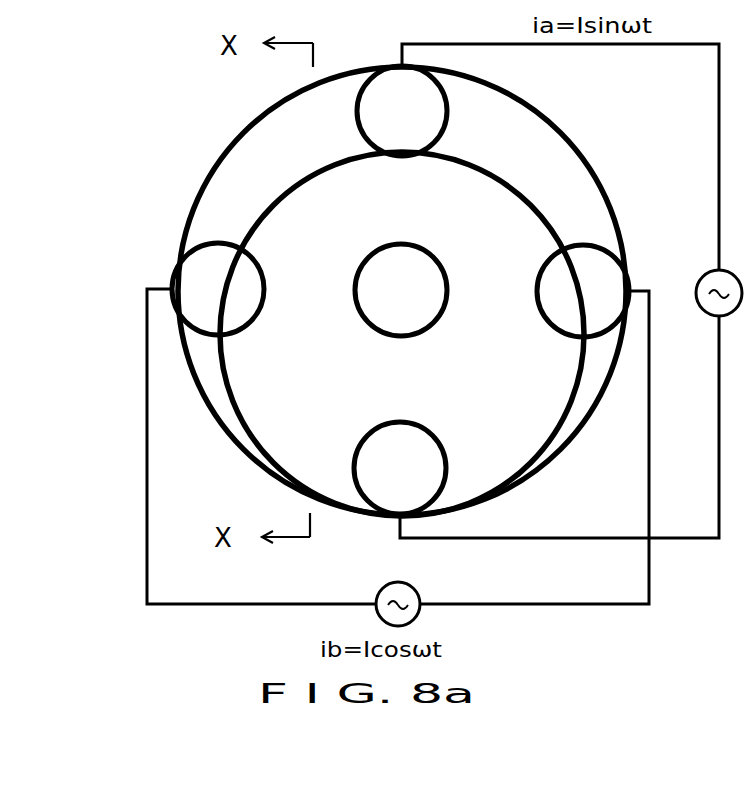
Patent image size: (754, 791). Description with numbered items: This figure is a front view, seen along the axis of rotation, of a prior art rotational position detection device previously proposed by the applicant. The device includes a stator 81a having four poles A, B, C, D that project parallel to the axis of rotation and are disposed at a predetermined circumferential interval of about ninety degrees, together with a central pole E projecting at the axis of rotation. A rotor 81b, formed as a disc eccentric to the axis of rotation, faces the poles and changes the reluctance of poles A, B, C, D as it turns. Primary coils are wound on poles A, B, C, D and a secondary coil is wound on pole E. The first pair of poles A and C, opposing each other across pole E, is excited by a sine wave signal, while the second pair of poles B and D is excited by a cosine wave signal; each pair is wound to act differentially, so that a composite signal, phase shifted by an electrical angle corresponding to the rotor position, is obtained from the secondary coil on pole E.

The stator 81a is at (306, 83).
The rotor 81b is at (283, 197).
The pole A is at (380, 90).
The pole B is at (603, 272).
The pole C is at (377, 490).
The pole D is at (195, 269).
The pole E is at (424, 268).